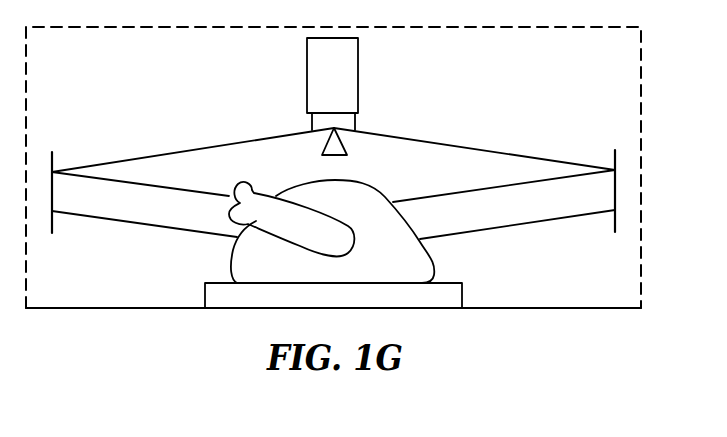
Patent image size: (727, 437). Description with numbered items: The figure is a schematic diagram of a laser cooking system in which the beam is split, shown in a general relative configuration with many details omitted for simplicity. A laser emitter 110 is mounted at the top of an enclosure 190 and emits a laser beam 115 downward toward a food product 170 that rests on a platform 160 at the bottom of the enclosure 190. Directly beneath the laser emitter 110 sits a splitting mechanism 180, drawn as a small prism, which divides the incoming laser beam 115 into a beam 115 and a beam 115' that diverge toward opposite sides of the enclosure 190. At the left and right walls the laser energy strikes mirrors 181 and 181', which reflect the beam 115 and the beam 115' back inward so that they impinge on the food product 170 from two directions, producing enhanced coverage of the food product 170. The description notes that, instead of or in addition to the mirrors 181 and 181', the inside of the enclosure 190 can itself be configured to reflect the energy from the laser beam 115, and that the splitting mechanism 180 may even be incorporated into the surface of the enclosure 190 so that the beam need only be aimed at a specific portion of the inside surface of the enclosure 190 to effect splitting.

The laser emitter 110 is at (358, 77).
The laser beam 115 is at (193, 171).
The beam 115' is at (474, 172).
The platform 160 is at (462, 296).
The food product 170 is at (435, 262).
The splitting mechanism 180 is at (340, 141).
The mirror 181 is at (79, 185).
The mirror 181' is at (586, 184).
The enclosure 190 is at (642, 165).